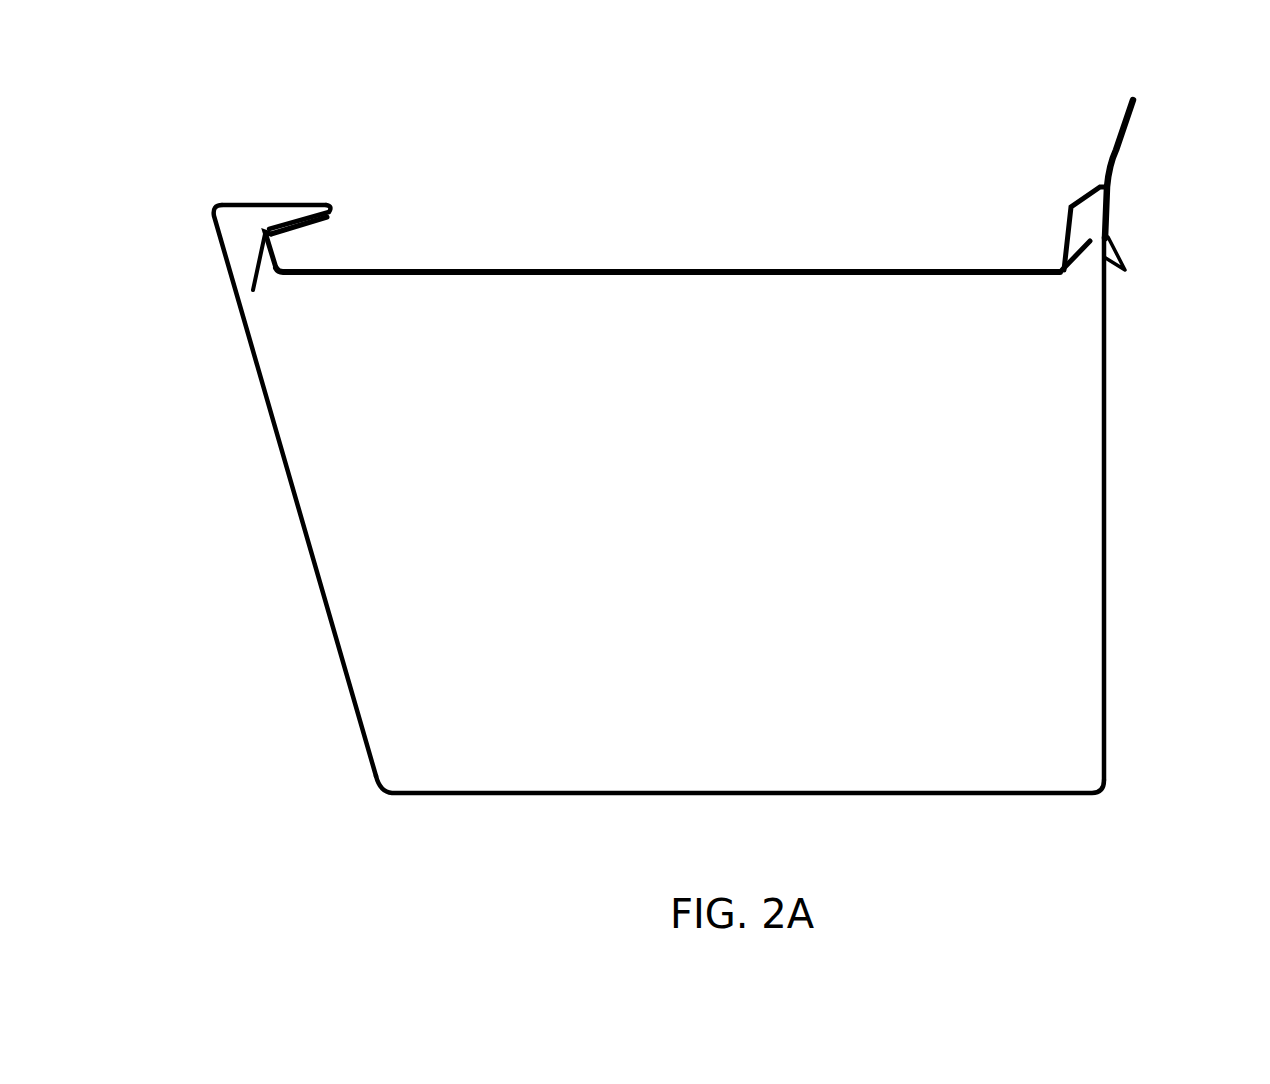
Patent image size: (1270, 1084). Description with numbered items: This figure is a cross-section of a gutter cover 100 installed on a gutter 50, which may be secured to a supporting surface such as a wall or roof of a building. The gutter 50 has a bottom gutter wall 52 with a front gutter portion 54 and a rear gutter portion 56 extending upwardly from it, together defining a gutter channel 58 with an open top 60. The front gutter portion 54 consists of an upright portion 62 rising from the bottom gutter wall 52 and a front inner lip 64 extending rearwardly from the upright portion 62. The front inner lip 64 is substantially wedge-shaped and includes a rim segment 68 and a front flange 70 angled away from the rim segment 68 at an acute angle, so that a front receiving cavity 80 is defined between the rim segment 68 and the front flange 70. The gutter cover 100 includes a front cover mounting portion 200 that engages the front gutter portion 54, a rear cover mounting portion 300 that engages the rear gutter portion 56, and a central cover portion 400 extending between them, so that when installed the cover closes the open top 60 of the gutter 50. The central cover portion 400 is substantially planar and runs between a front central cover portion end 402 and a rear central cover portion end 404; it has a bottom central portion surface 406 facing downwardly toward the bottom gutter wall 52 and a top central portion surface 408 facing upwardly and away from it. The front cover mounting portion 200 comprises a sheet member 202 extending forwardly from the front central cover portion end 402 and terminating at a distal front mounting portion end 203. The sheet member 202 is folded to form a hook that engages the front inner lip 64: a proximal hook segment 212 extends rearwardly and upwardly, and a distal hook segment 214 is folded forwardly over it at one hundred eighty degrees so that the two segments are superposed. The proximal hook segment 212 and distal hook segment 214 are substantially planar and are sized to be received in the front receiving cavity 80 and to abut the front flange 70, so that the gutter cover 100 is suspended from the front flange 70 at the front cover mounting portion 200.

The gutter 50 is at (702, 461).
The bottom gutter wall 52 is at (1009, 803).
The front gutter portion 54 is at (314, 490).
The rear gutter portion 56 is at (1097, 508).
The gutter channel 58 is at (745, 590).
The open top 60 is at (752, 301).
The upright portion 62 is at (290, 488).
The front inner lip 64 is at (278, 163).
The rim segment 68 is at (232, 204).
The front flange 70 is at (332, 213).
The front receiving cavity 80 is at (252, 219).
The gutter cover 100 is at (686, 248).
The front cover mounting portion 200 is at (314, 248).
The sheet member 202 is at (290, 298).
The distal front mounting portion end 203 is at (427, 277).
The proximal hook segment 212 is at (300, 233).
The distal hook segment 214 is at (287, 218).
The rear cover mounting portion 300 is at (1076, 175).
The central cover portion 400 is at (683, 274).
The front central cover portion end 402 is at (278, 268).
The rear central cover portion end 404 is at (1060, 262).
The bottom central portion surface 406 is at (878, 278).
The top central portion surface 408 is at (838, 266).